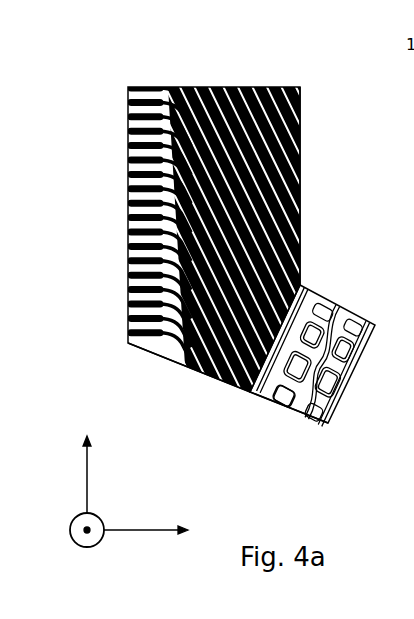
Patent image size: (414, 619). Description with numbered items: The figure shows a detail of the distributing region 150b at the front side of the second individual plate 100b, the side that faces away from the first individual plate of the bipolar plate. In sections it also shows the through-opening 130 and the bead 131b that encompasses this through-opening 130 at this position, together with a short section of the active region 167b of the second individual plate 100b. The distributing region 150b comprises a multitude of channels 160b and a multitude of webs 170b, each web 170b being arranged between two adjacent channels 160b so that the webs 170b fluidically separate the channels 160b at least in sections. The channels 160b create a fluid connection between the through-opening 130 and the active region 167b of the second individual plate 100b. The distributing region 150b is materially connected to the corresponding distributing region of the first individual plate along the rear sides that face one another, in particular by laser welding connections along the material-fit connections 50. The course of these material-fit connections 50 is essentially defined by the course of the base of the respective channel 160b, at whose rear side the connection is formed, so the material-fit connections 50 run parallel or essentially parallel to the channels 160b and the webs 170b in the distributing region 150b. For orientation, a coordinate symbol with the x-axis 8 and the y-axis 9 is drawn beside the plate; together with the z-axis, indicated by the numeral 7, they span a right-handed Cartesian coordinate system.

The second individual plate 100b is at (150, 140).
The active region 167b is at (130, 85).
The channels 160b is at (258, 87).
The material-fit connections 50 is at (213, 90).
The webs 170b is at (138, 348).
The distributing region 150b is at (300, 277).
The through-opening 130 is at (388, 400).
The bead 131b is at (302, 403).
The y-axis 9 is at (90, 483).
The x-axis 8 is at (128, 528).
The z-axis 7 is at (87, 546).